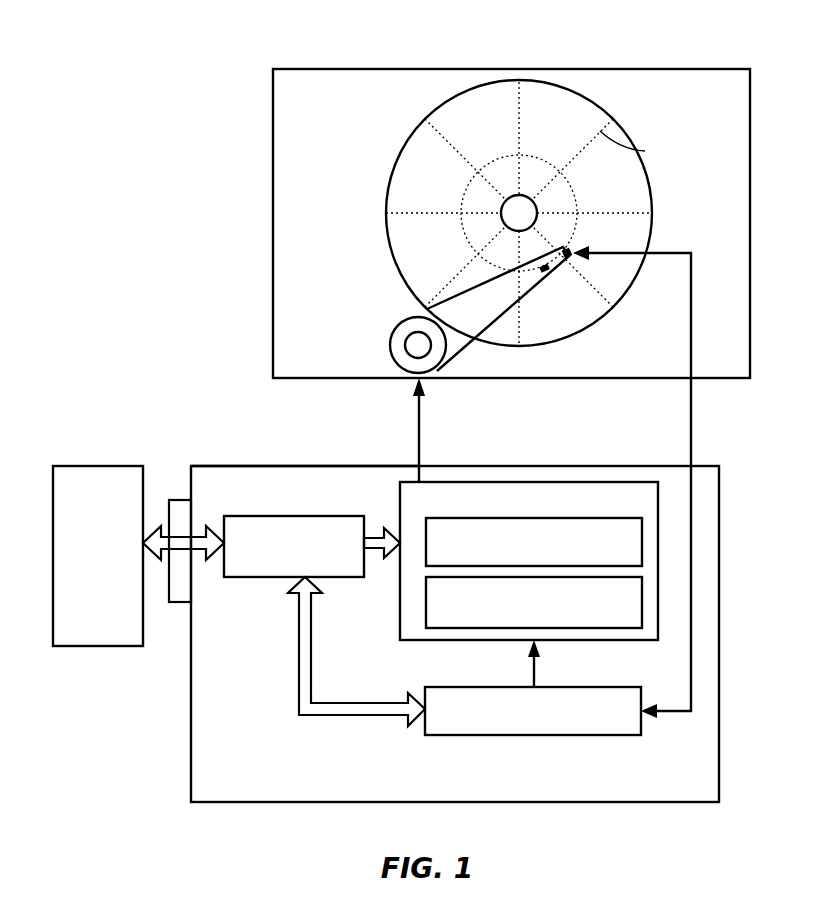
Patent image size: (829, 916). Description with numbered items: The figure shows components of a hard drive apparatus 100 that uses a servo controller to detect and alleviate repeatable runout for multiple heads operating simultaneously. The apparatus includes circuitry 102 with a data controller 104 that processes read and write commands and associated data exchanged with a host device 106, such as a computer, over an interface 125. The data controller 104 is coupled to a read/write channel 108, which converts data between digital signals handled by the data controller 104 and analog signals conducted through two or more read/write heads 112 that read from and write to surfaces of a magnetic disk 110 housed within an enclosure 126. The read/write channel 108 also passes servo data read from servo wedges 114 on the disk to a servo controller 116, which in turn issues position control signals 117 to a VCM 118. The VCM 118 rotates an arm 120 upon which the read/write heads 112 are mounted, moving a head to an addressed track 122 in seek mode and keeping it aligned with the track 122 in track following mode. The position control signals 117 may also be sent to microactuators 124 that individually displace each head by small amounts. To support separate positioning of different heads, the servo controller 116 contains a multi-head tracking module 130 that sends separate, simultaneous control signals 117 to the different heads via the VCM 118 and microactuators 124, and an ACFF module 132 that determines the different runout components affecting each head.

The hard drive apparatus 100 is at (130, 210).
The circuitry 102 is at (195, 466).
The data controller 104 is at (257, 516).
The host device 106 is at (84, 466).
The read/write channel 108 is at (496, 738).
The magnetic disk 110 is at (523, 82).
The read/write head 112 is at (571, 259).
The servo wedges 114 is at (645, 151).
The servo controller 116 is at (658, 634).
The position control signals 117 is at (421, 421).
The VCM 118 is at (391, 342).
The arm 120 is at (434, 313).
The track 122 is at (462, 190).
The microactuators 124 is at (546, 272).
The interface 125 is at (307, 466).
The disk enclosure 126 is at (302, 69).
The multi-head tracking module 130 is at (642, 538).
The ACFF module 132 is at (642, 610).